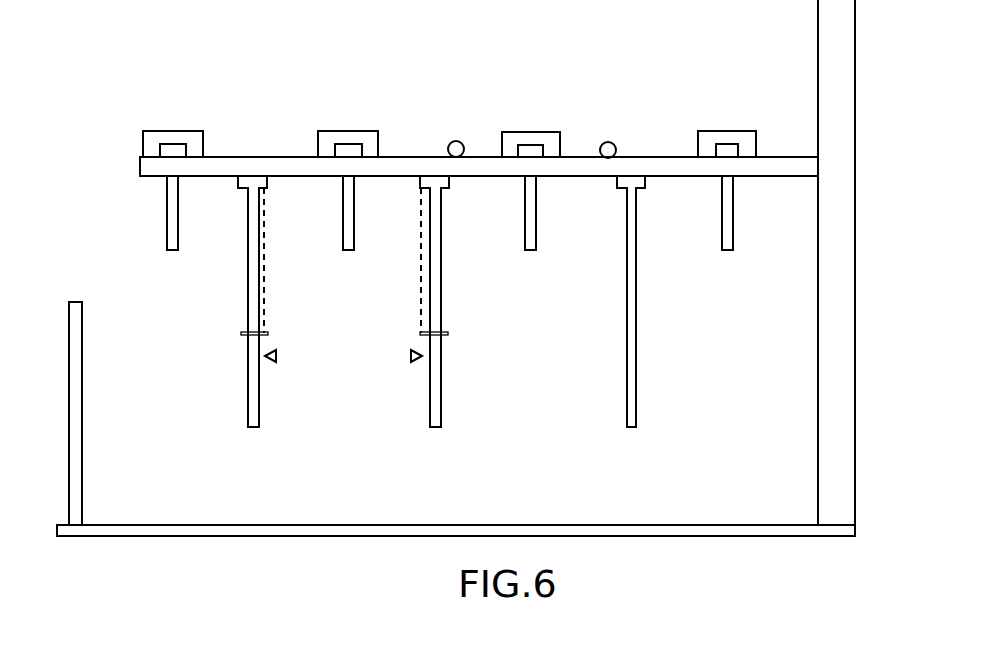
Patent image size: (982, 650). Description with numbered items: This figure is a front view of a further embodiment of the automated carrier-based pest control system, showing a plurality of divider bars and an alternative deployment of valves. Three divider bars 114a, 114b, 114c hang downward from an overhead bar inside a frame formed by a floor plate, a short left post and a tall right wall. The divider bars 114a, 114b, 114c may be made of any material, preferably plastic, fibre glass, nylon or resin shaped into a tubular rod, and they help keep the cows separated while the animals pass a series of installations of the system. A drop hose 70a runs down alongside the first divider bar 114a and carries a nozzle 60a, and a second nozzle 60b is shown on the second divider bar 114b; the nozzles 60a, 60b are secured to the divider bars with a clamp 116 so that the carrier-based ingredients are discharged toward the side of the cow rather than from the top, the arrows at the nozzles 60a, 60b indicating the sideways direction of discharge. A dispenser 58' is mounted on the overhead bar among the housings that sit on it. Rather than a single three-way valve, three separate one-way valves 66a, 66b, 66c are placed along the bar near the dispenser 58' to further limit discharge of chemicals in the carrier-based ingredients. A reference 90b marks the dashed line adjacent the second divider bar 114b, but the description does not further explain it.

The dispenser 58' is at (563, 113).
The one-way valve 66a is at (543, 152).
The one-way valve 66b is at (458, 141).
The one-way valve 66c is at (616, 146).
The drop hose 70a is at (265, 262).
The guide line 90b is at (420, 292).
The divider bar 114a is at (247, 270).
The divider bar 114b is at (443, 333).
The divider bar 114c is at (638, 333).
The clamp 116 is at (268, 333).
The nozzle 60a is at (276, 356).
The nozzle 60b is at (411, 356).